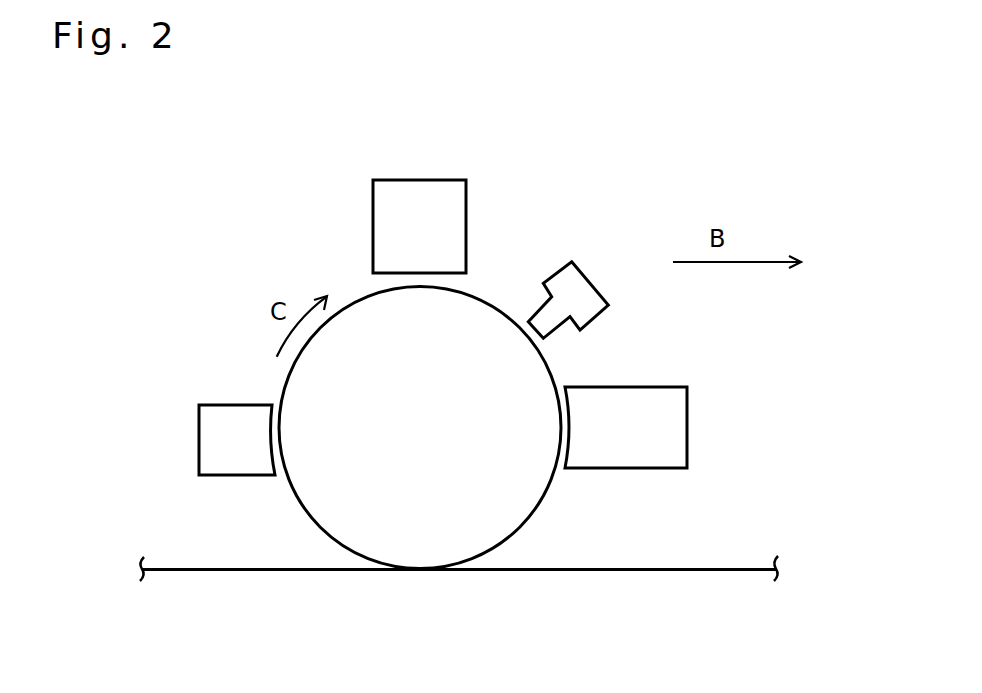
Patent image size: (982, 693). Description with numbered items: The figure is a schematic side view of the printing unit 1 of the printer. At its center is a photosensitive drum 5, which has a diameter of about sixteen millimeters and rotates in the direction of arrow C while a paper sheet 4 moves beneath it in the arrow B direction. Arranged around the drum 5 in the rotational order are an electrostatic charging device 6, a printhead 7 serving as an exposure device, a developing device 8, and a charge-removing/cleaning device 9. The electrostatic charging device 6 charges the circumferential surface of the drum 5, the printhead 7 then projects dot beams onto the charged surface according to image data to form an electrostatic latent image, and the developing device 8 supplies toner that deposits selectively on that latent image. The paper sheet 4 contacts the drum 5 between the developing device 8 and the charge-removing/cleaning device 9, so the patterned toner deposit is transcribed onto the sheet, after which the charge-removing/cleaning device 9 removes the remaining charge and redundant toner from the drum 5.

The printing unit 1 is at (235, 235).
The paper sheet 4 is at (638, 571).
The photosensitive drum 5 is at (300, 500).
The electrostatic charging device 6 is at (452, 178).
The printhead 7 is at (587, 272).
The developing device 8 is at (687, 413).
The charge-removing/cleaning device 9 is at (199, 440).